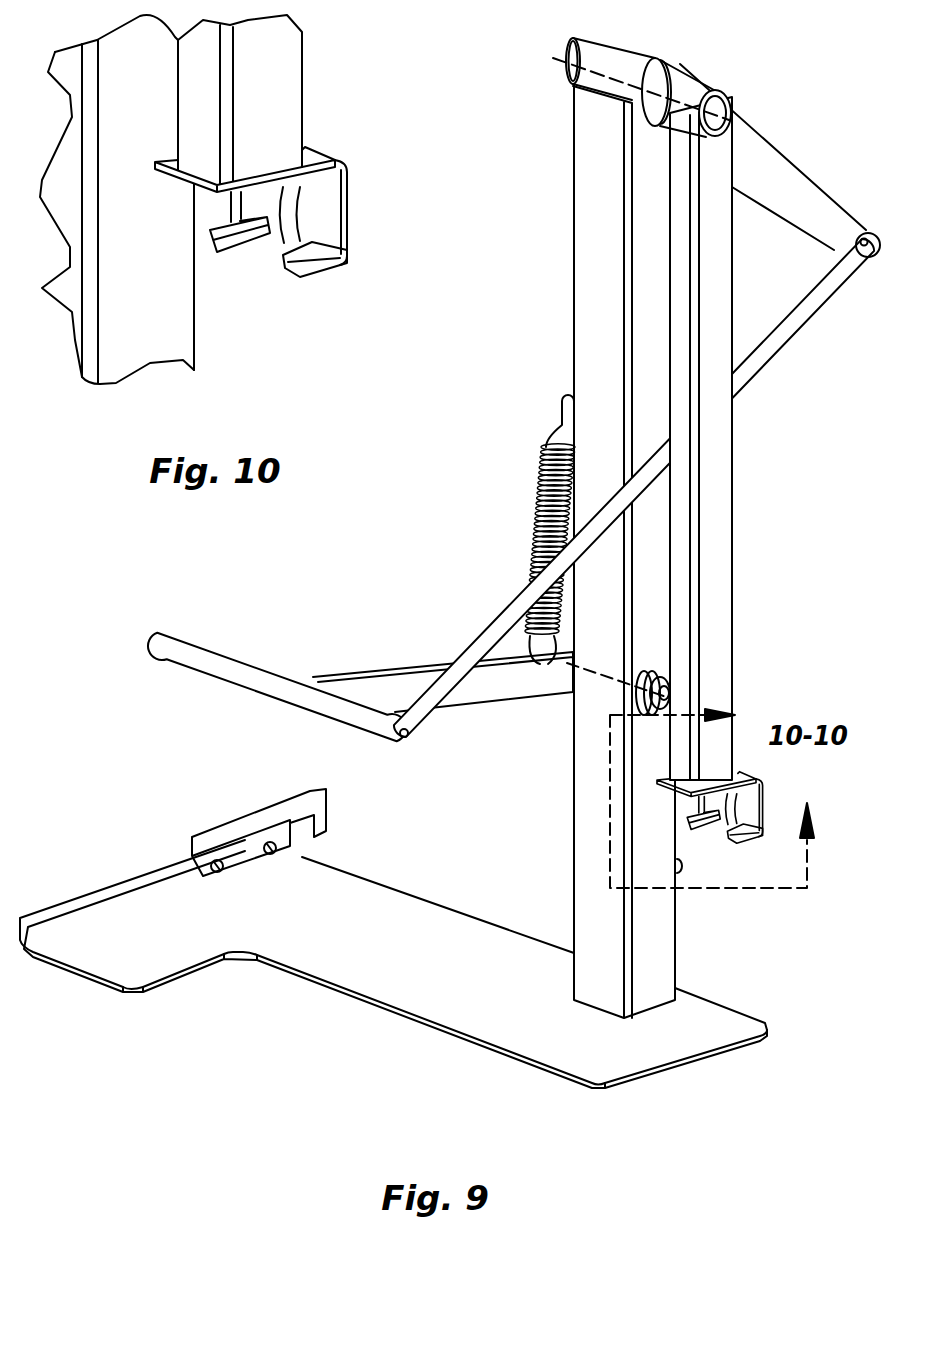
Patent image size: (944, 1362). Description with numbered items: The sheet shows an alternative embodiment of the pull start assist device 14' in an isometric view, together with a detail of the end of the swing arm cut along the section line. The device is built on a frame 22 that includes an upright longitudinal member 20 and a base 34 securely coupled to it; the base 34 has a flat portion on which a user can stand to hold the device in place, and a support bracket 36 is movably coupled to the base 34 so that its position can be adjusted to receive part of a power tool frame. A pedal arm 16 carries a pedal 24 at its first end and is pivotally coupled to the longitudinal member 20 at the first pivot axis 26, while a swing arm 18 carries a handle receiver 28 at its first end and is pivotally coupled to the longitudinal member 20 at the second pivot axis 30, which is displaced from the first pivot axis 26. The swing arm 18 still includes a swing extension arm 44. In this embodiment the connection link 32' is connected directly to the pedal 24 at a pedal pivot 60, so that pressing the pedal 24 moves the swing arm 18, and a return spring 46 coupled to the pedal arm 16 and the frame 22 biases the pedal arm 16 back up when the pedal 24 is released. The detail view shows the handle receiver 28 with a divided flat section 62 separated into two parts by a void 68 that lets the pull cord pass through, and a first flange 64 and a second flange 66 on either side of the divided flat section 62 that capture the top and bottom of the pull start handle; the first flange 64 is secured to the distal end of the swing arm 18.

In FIG. 9, the pull start assist device 14' is at (452, 92).
In FIG. 9, the pedal arm 16 is at (412, 624).
In FIG. 9, the swing arm 18 is at (755, 547).
In FIG. 9, the longitudinal member 20 is at (586, 296).
In FIG. 9, the frame 22 is at (529, 861).
In FIG. 9, the pedal 24 is at (243, 660).
In FIG. 9, the first pivot axis 26 is at (572, 665).
In FIG. 10, the handle receiver 28 is at (353, 302).
In FIG. 9, the handle receiver 28 is at (749, 870).
In FIG. 9, the second pivot axis 30 is at (619, 80).
In FIG. 9, the connection link 32' is at (634, 488).
In FIG. 9, the base 34 is at (340, 960).
In FIG. 9, the support bracket 36 is at (226, 798).
In FIG. 9, the swing extension arm 44 is at (760, 150).
In FIG. 9, the return spring 46 is at (534, 528).
In FIG. 9, the pedal pivot 60 is at (410, 743).
In FIG. 10, the divided flat section 62 is at (368, 190).
In FIG. 10, the first flange 64 is at (310, 160).
In FIG. 10, the second flange 66 is at (294, 296).
In FIG. 10, the void 68 is at (310, 217).